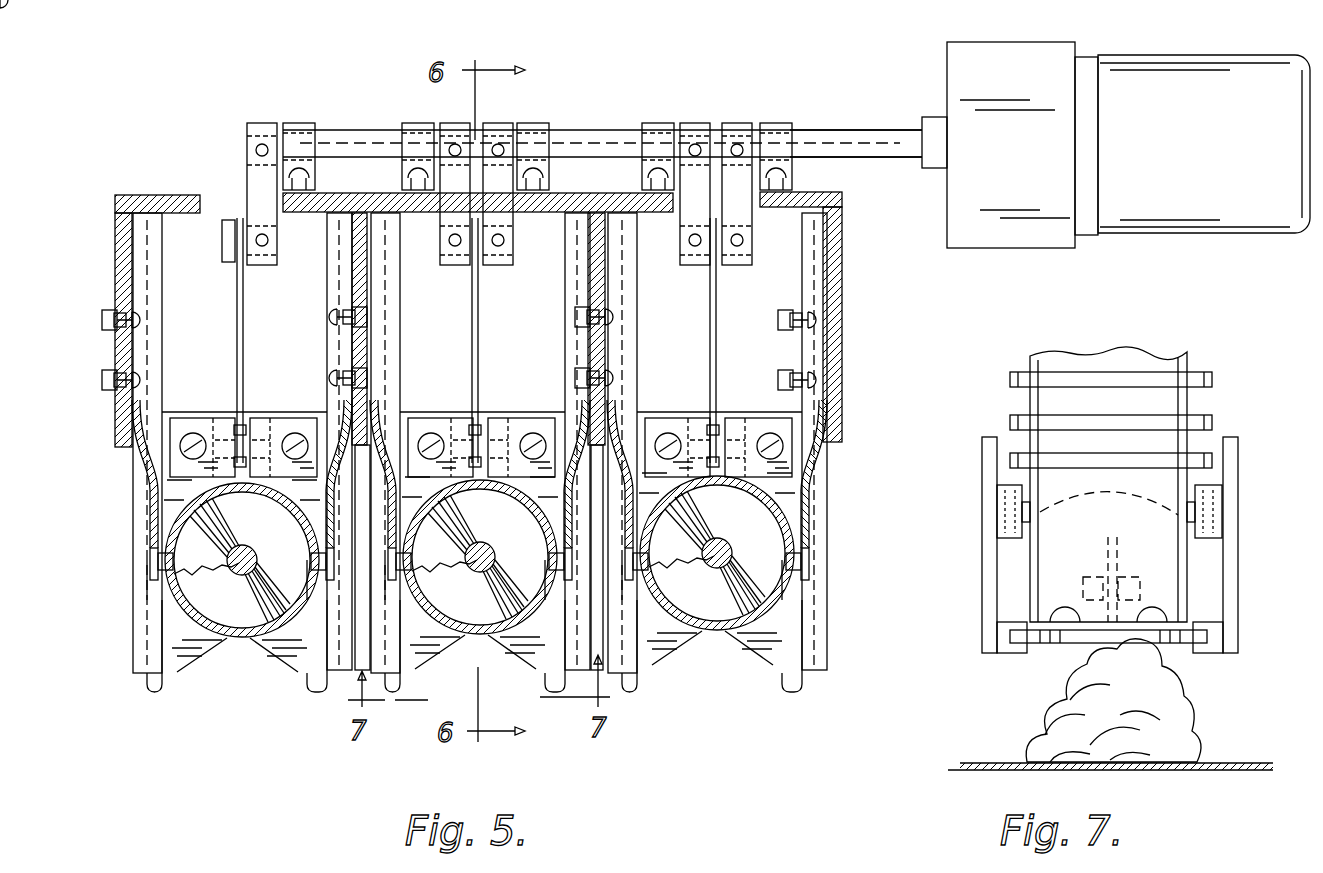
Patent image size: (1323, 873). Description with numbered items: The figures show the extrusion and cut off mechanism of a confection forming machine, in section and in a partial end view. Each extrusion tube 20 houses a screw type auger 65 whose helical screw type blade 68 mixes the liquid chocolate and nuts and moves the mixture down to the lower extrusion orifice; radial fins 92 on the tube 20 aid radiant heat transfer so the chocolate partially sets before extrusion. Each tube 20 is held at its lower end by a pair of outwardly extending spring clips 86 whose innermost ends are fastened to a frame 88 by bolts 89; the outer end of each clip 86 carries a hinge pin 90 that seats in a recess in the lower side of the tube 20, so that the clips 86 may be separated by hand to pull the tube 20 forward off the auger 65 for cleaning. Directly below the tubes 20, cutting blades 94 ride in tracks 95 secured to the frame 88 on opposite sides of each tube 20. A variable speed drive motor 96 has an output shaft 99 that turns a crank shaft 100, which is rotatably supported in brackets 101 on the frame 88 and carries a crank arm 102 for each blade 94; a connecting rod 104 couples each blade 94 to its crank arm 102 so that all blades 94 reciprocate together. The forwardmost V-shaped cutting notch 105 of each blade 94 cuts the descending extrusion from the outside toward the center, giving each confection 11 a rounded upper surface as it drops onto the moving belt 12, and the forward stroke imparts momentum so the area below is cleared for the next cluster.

In FIG. 7, the confection 11 is at (1170, 721).
In FIG. 7, the belt 12 is at (1240, 770).
In FIG. 5, the extrusion tube 20 is at (175, 616).
In FIG. 7, the extrusion tube 20 is at (1040, 355).
In FIG. 5, the auger 65 is at (258, 548).
In FIG. 5, the helical screw type blade 68 is at (180, 552).
In FIG. 5, the spring clips 86 is at (330, 426).
In FIG. 7, the spring clips 86 is at (1007, 513).
In FIG. 5, the frame 88 is at (115, 282).
In FIG. 7, the frame 88 is at (983, 586).
In FIG. 5, the bolts 89 is at (145, 377).
In FIG. 5, the hinge pin 90 is at (280, 572).
In FIG. 7, the hinge pin 90 is at (1135, 492).
In FIG. 7, the radial fins 92 is at (1212, 422).
In FIG. 5, the cutting blades 94 is at (185, 678).
In FIG. 7, the cutting blades 94 is at (1075, 643).
In FIG. 5, the tracks 95 is at (140, 635).
In FIG. 7, the tracks 95 is at (1017, 655).
In FIG. 5, the variable speed drive motor 96 is at (1173, 65).
In FIG. 5, the output shaft 99 is at (848, 128).
In FIG. 5, the crank shaft 100 is at (345, 130).
In FIG. 5, the brackets 101 is at (296, 122).
In FIG. 5, the crank arm 102 is at (247, 175).
In FIG. 5, the connecting rod 104 is at (238, 308).
In FIG. 7, the connecting rod 104 is at (1106, 560).
In FIG. 5, the V-shaped cutting notch 105 is at (210, 665).